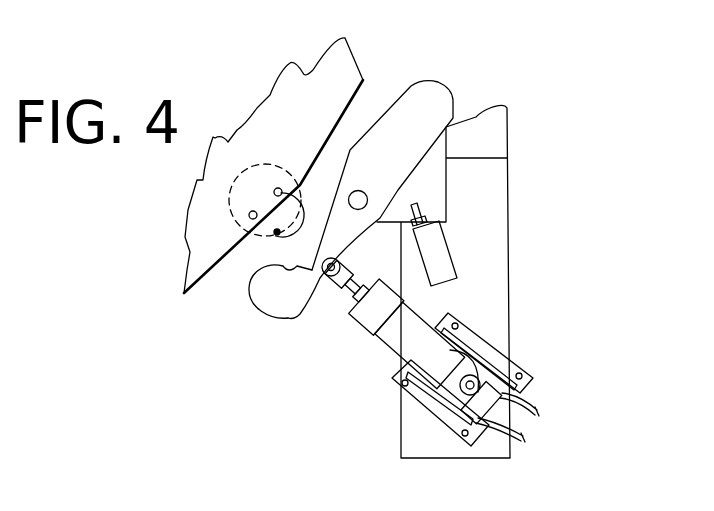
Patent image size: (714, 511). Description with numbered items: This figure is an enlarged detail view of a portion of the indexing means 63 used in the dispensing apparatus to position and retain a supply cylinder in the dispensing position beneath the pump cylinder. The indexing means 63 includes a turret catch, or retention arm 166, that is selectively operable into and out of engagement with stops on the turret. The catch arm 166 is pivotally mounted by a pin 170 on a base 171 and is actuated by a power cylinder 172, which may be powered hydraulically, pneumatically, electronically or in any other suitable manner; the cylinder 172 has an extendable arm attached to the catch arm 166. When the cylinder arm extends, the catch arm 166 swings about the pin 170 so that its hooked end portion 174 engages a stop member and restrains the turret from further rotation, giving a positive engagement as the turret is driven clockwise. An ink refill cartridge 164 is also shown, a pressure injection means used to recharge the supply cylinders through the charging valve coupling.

The indexing means 63 is at (525, 300).
The ink refill cartridge 164 is at (272, 234).
The catch arm 166 is at (455, 84).
The pin 170 is at (365, 194).
The base 171 is at (492, 207).
The power cylinder 172 is at (405, 338).
The hooked end portion 174 is at (272, 278).